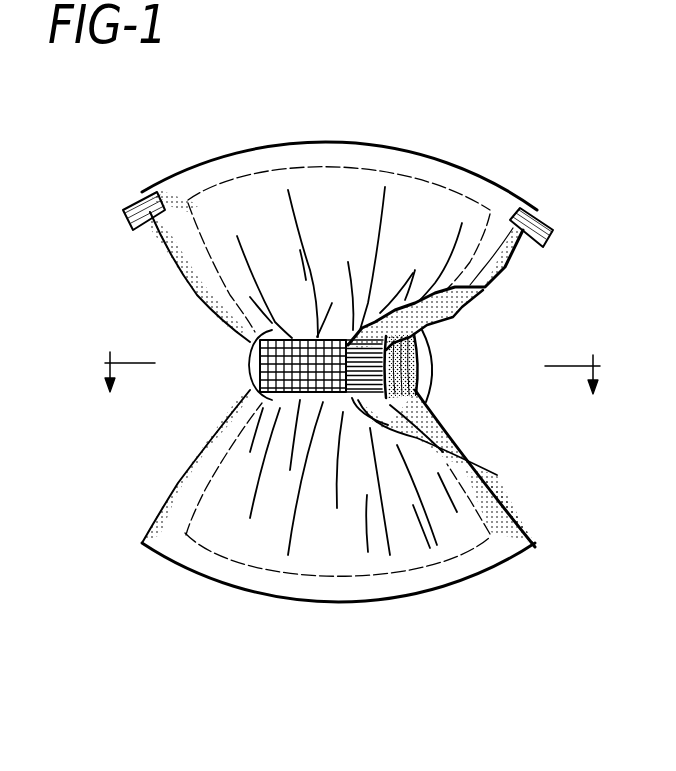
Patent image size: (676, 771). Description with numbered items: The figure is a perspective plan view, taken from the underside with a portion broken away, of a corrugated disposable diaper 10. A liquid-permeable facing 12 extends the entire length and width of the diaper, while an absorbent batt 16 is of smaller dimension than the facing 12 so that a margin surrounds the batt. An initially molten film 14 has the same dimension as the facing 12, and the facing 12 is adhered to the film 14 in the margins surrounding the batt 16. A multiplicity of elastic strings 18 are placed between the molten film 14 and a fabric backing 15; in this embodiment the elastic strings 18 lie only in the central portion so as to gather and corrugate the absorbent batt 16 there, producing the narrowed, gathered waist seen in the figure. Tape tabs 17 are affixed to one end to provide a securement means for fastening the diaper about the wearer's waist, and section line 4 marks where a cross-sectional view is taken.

The corrugated disposable diaper 10 is at (257, 133).
The liquid-permeable facing 12 is at (443, 423).
The initially molten film 14 is at (478, 293).
The fabric backing 15 is at (443, 205).
The absorbent batt 16 is at (417, 412).
The tape tabs 17 is at (140, 212).
The elastic strings 18 is at (258, 343).
The section line 4- 4 is at (351, 371).